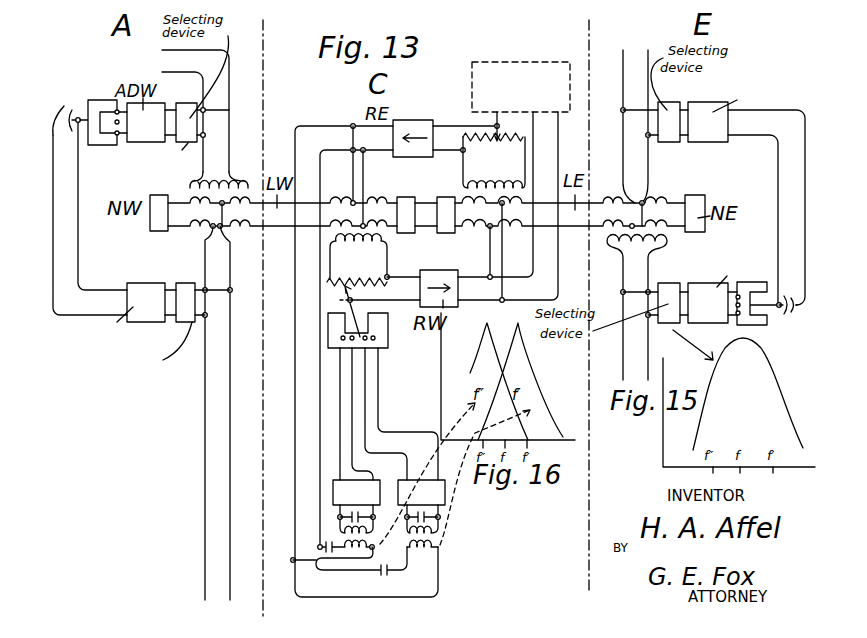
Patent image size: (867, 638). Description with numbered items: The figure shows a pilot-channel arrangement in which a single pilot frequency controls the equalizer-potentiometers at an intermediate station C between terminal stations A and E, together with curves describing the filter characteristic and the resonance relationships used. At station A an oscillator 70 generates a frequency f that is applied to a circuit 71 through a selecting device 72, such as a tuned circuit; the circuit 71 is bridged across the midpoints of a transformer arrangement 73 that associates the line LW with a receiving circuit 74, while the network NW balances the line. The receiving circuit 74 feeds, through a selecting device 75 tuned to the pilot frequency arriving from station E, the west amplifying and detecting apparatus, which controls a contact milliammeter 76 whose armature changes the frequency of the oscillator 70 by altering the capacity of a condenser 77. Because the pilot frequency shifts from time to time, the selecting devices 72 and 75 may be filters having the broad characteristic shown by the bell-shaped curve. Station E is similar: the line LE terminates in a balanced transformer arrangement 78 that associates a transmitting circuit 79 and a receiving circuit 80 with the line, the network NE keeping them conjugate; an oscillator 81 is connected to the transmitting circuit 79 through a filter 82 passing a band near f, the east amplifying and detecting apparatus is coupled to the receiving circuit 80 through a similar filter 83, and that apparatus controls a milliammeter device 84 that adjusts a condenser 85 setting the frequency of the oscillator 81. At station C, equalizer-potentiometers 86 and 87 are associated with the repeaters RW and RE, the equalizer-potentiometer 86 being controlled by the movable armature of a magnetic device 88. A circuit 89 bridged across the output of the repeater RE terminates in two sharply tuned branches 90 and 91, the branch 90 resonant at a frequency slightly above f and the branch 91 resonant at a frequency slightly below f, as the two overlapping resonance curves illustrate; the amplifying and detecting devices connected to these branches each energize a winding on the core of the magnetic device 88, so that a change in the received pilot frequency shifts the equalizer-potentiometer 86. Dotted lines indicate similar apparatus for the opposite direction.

The oscillator 70 is at (142, 318).
The circuit 71 is at (224, 274).
The selecting device 72 is at (186, 290).
The transformer arrangement 73 is at (187, 184).
The receiving circuit 74 is at (227, 174).
The selecting device 75 is at (201, 125).
The contact milliammeter 76 is at (102, 106).
The condenser 77 is at (67, 111).
The balanced transformer arrangement 78 is at (648, 200).
The transmitting circuit 79 is at (640, 165).
The receiving circuit 80 is at (640, 278).
The oscillator 81 is at (712, 110).
The filter 82 is at (664, 108).
The filter 83 is at (674, 288).
The milliammeter device 84 is at (763, 324).
The condenser 85 is at (792, 310).
The equalizer-potentiometer 86 is at (355, 279).
The equalizer-potentiometer 87 is at (493, 143).
The magnetic device 88 is at (388, 338).
The circuit 89 is at (315, 133).
The tuned branch 90 is at (412, 513).
The tuned branch 91 is at (349, 527).